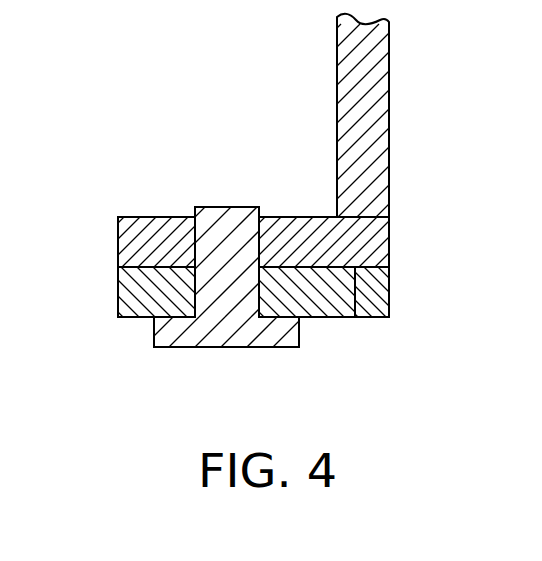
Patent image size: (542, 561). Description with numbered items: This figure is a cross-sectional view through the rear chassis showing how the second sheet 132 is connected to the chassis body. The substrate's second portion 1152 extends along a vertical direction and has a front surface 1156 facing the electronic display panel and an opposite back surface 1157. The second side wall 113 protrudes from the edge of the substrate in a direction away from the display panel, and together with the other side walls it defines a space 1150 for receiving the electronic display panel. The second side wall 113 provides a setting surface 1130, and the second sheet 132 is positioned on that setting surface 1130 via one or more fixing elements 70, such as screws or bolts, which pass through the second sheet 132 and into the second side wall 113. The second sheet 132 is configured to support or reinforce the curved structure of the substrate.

The space 1150 is at (158, 106).
The front surface 1156 is at (336, 63).
The back surface 1157 is at (390, 66).
The second portion 1152 is at (386, 125).
The second side wall 113 is at (127, 229).
The second sheet 132 is at (127, 286).
The fixing element 70 is at (221, 340).
The setting surface 1130 is at (357, 300).